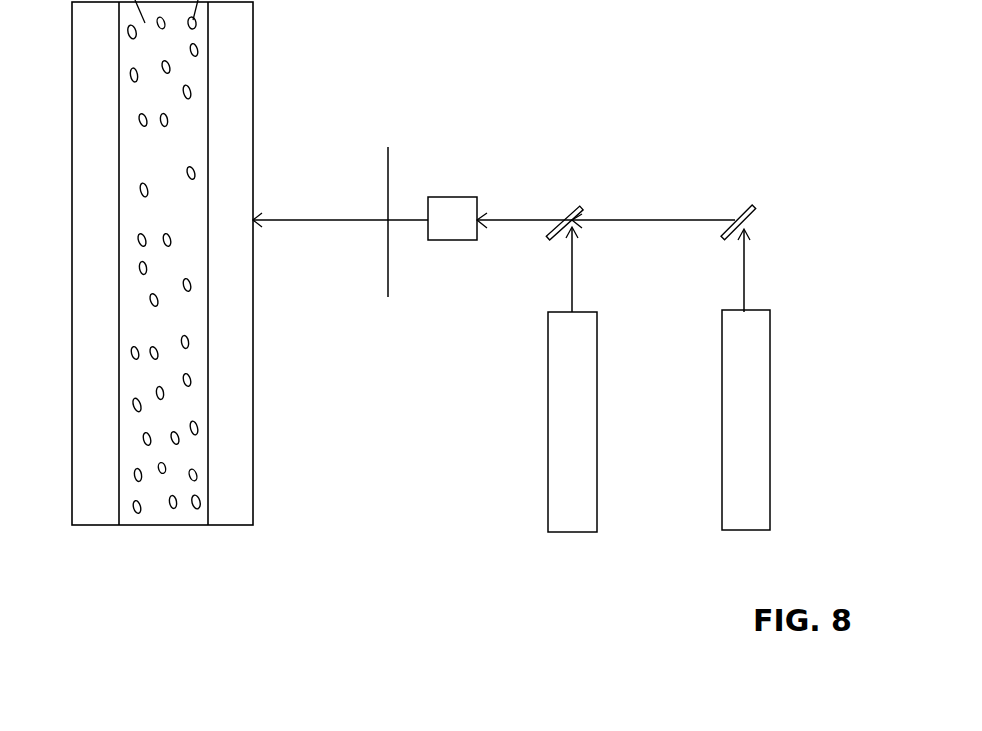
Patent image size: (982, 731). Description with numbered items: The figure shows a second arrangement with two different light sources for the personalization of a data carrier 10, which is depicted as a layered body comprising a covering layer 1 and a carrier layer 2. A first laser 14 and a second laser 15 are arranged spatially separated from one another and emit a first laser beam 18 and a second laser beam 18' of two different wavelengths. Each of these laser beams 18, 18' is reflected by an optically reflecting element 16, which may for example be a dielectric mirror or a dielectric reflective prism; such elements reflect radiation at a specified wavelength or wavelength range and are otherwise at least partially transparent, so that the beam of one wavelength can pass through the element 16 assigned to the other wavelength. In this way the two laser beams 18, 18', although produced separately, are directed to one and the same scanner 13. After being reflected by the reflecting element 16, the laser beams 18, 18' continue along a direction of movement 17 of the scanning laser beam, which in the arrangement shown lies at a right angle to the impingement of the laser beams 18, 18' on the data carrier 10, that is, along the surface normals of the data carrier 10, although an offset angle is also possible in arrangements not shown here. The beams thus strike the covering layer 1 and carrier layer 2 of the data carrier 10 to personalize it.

The covering layer 1 is at (233, 146).
The carrier layer 2 is at (98, 257).
The data carrier 10 is at (169, 313).
The scanner 13 is at (456, 240).
The first laser 14 is at (742, 443).
The second laser 15 is at (575, 428).
The optical reflecting element 16 is at (576, 205).
The direction of movement of the scanning laser beam 17 is at (387, 223).
The first laser beam 18 is at (648, 213).
The second laser beam 18' is at (340, 272).